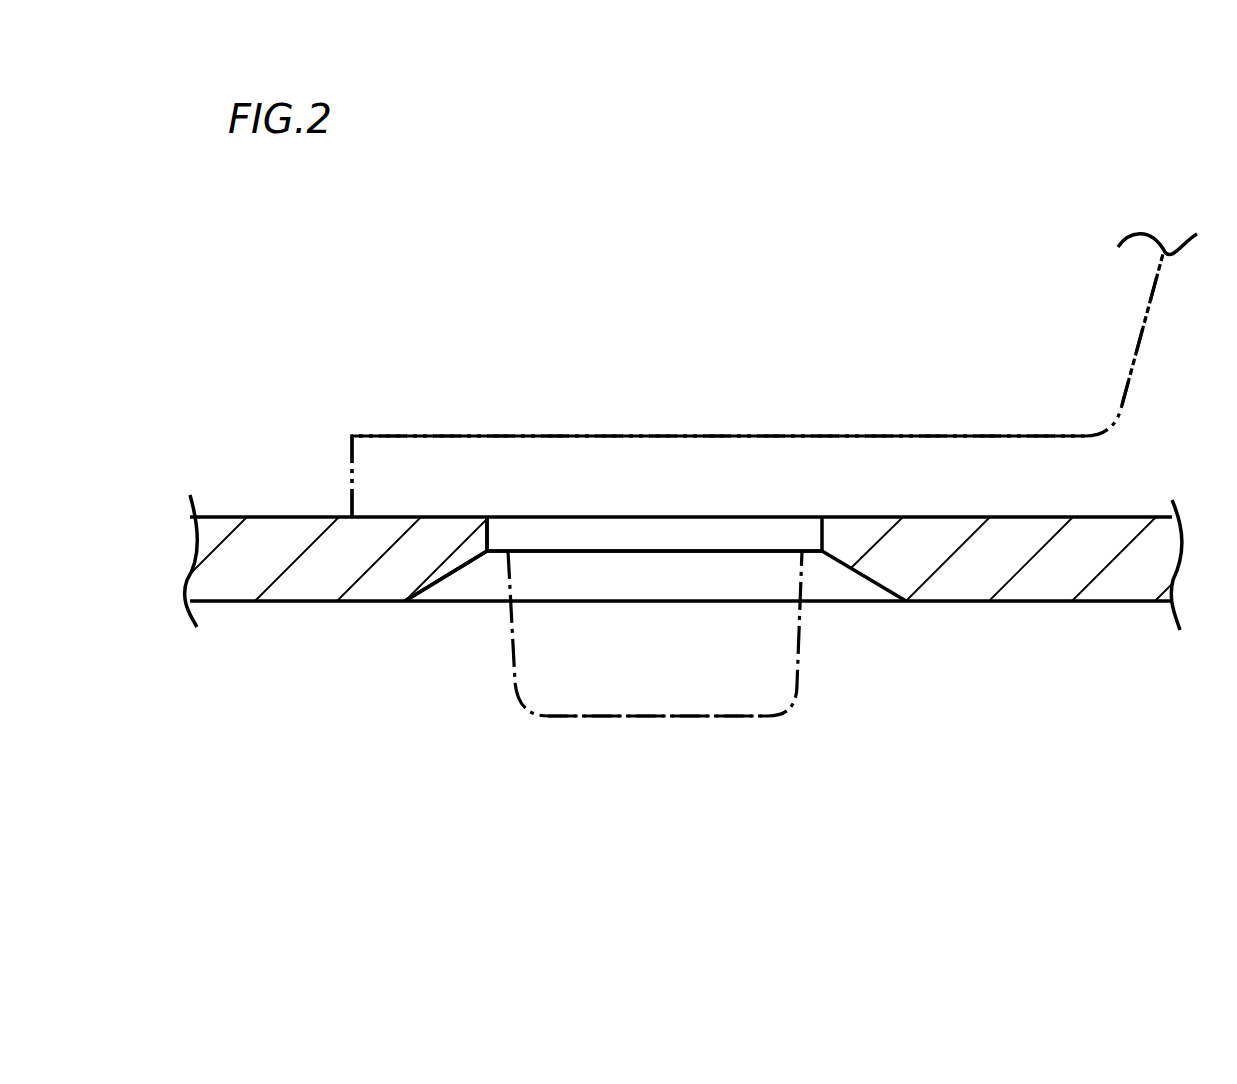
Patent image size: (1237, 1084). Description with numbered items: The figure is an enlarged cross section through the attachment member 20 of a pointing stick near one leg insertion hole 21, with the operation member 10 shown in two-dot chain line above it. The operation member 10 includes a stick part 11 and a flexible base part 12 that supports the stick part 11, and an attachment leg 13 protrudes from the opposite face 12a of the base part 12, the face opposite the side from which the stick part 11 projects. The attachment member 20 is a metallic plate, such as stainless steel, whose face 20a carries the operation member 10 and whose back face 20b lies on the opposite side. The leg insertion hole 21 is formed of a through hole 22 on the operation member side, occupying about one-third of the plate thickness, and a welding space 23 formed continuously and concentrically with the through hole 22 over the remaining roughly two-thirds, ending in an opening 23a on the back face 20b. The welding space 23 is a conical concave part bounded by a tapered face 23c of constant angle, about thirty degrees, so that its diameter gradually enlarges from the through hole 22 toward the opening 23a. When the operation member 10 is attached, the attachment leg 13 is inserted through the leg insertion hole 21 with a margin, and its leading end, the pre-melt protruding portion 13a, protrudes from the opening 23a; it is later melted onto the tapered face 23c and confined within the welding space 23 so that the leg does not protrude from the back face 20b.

The operation member 10 is at (851, 330).
The stick part 11 is at (1146, 314).
The flexible base part 12 is at (666, 436).
The opposite face of the base part 12a is at (957, 518).
The attachment leg 13 is at (792, 672).
The pre-melt protruding portion 13a is at (698, 688).
The attachment member 20 is at (1047, 590).
The face provided with the operation member 20a is at (270, 517).
The back face 20b is at (270, 601).
The leg insertion hole 21 is at (635, 566).
The through hole 22 is at (548, 528).
The welding space 23 is at (559, 603).
The opening 23a is at (430, 603).
The tapered face 23c is at (880, 588).